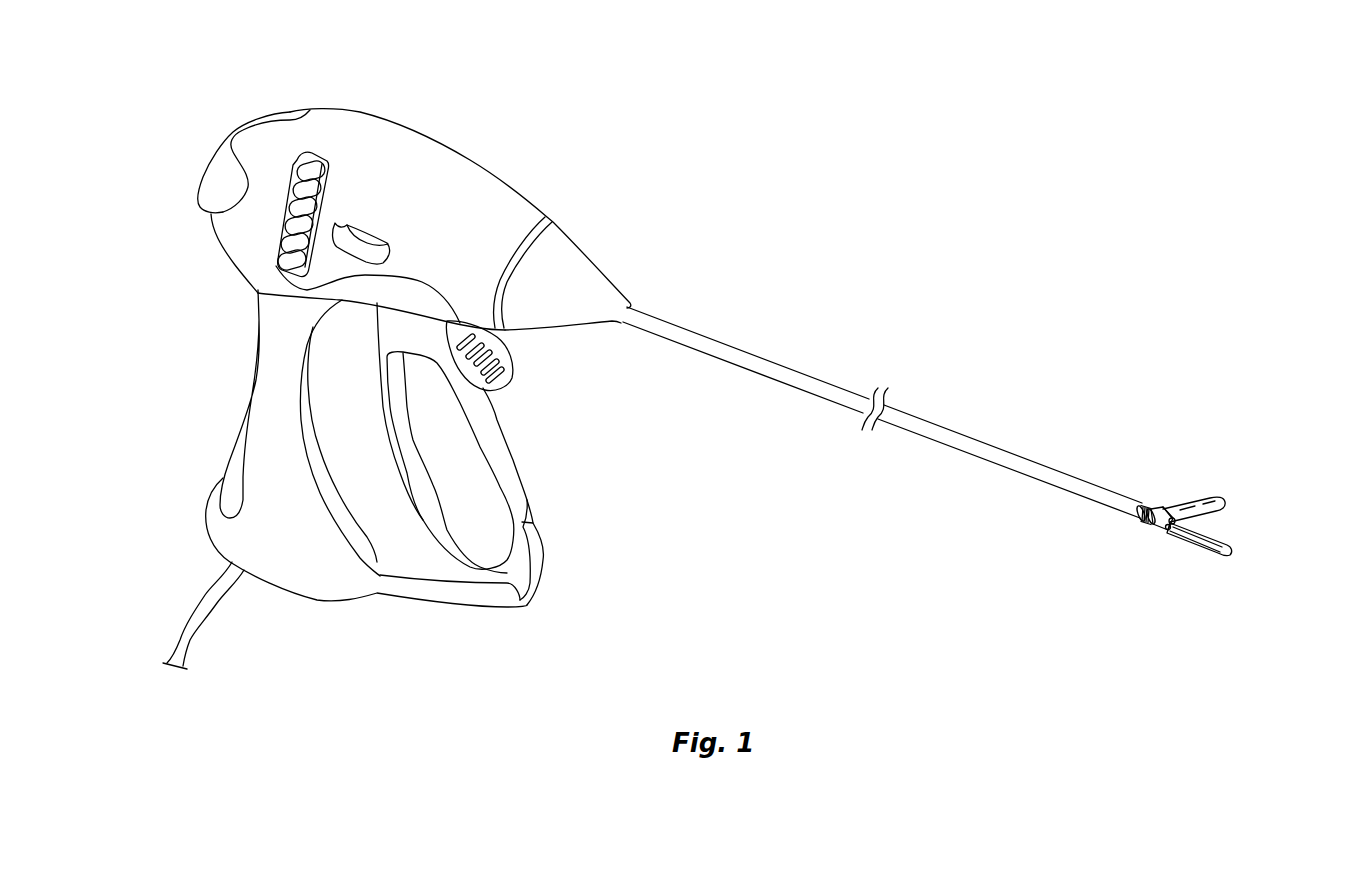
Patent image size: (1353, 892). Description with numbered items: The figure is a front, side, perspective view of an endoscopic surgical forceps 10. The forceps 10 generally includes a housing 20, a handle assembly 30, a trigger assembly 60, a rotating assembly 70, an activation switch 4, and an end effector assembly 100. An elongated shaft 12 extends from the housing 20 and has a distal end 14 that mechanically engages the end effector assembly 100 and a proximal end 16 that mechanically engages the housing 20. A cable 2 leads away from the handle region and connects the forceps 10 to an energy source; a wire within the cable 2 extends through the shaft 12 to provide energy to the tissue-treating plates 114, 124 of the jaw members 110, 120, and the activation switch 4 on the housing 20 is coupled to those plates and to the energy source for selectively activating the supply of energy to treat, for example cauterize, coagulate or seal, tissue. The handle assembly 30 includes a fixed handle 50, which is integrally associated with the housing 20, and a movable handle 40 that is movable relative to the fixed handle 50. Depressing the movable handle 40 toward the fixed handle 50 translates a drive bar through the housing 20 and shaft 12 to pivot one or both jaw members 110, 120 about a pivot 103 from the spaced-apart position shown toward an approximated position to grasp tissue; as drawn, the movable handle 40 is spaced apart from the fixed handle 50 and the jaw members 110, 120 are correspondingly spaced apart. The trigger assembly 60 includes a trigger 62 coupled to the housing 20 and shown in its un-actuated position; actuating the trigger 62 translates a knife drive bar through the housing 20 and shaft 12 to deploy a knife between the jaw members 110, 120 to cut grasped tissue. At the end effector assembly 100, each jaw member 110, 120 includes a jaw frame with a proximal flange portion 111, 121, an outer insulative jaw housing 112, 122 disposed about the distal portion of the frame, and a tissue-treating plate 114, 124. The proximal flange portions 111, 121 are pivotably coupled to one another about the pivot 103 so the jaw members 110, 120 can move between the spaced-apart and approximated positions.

The cable 2 is at (188, 628).
The activation switch 4 is at (207, 178).
The forceps 10 is at (587, 110).
The shaft 12 is at (937, 443).
The distal end 14 is at (1135, 516).
The proximal end 16 is at (624, 310).
The housing 20 is at (308, 112).
The handle assembly 30 is at (302, 617).
The movable handle 40 is at (524, 506).
The fixed handle 50 is at (257, 478).
The trigger assembly 60 is at (522, 357).
The trigger 62 is at (510, 382).
The rotating assembly 70 is at (278, 223).
The end effector assembly 100 is at (1300, 488).
The pivot 103 is at (1157, 528).
The jaw member 110 is at (1252, 463).
The proximal flange portion 111 is at (1165, 508).
The outer insulative jaw housing 112 is at (1208, 496).
The tissue-treating plate 114 is at (1212, 512).
The jaw member 120 is at (1250, 577).
The proximal flange portion 121 is at (1163, 535).
The outer insulative jaw housing 122 is at (1200, 548).
The tissue-treating plate 124 is at (1233, 542).